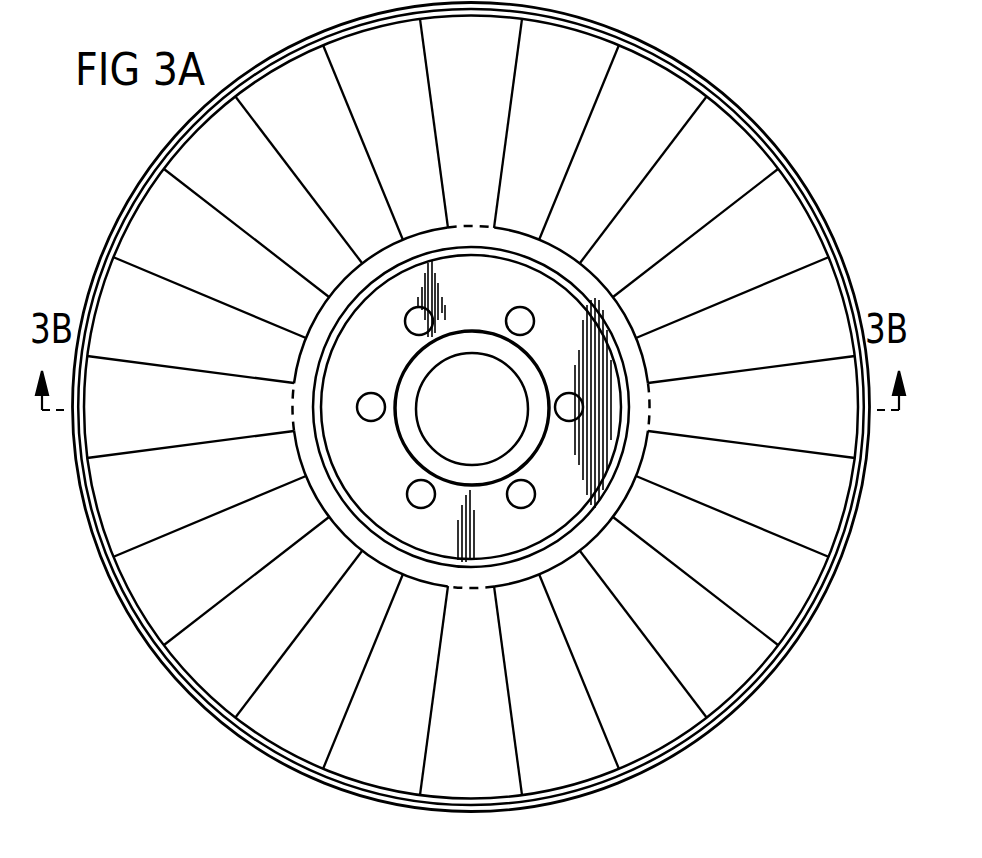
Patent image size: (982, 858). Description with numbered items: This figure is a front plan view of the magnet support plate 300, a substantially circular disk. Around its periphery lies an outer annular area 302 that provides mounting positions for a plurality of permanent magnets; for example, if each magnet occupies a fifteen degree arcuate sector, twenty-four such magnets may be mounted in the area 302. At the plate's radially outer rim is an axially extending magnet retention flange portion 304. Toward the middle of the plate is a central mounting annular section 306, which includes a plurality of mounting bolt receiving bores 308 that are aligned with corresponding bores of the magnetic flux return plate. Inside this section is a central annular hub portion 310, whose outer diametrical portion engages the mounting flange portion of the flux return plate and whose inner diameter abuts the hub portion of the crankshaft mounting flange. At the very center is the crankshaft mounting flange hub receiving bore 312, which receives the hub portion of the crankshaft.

The magnet support plate 300 is at (158, 672).
The outer annular area 302 is at (722, 691).
The magnet retention flange portion 304 is at (280, 753).
The central mounting annular section 306 is at (485, 552).
The mounting bolt receiving bores 308 is at (555, 406).
The central annular hub portion 310 is at (468, 342).
The crankshaft mounting flange hub receiving bore 312 is at (427, 435).